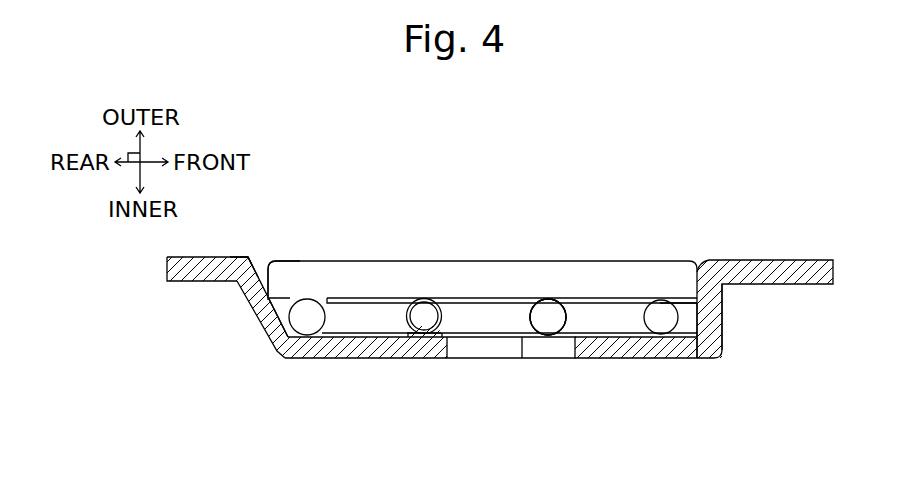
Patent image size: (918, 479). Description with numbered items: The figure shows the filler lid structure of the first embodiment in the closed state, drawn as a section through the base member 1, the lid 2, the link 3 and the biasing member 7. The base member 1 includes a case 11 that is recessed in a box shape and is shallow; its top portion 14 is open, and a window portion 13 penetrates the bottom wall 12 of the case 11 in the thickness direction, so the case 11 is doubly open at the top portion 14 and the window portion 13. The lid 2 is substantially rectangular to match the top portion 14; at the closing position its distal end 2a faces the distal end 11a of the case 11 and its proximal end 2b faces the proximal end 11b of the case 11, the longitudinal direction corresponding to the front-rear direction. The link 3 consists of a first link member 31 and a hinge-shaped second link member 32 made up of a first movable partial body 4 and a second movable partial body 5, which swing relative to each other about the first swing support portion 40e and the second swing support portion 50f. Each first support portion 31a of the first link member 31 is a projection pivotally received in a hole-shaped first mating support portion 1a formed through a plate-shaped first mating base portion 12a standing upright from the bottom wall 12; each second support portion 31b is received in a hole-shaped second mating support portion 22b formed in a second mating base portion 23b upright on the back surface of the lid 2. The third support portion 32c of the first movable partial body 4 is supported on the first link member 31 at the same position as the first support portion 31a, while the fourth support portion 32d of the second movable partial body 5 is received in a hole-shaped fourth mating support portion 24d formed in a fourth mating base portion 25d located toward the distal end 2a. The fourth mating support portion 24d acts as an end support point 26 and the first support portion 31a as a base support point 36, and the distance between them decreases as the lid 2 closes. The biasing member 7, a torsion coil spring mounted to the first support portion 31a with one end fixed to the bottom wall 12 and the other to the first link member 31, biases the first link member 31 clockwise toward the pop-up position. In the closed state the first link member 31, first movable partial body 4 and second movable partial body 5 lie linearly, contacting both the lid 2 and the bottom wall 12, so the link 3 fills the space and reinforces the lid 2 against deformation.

The base member 1 is at (188, 281).
The first mating support portion 1a is at (447, 340).
The case 11 is at (258, 304).
The distal end of the case 11a is at (707, 260).
The proximal end of the case 11b is at (251, 258).
The bottom wall 12 is at (347, 350).
The first mating base portion 12a is at (420, 330).
The window portion 13 is at (569, 349).
The top portion 14 is at (261, 251).
The lid 2 is at (398, 261).
The distal end of the lid 2a is at (712, 288).
The proximal end of the lid 2b is at (270, 260).
The second mating support portion 22b is at (277, 343).
The second mating base portion 23b is at (298, 284).
The fourth mating support portion 24d is at (552, 326).
The fourth mating base portion 25d is at (548, 312).
The end support point 26 is at (545, 368).
The link 3 is at (499, 310).
The first link member 31 is at (348, 337).
The first support portion 31a is at (430, 333).
The second support portion 31b is at (298, 302).
The second link member 32 is at (682, 300).
The third support portion 32c is at (417, 302).
The fourth support portion 32d is at (521, 358).
The base support point 36 is at (420, 392).
The first movable partial body 4 is at (519, 292).
The second movable partial body 5 is at (612, 320).
The second swing support portion 50f is at (665, 322).
The biasing member 7 is at (436, 302).
The first swing support portion 40e is at (693, 327).